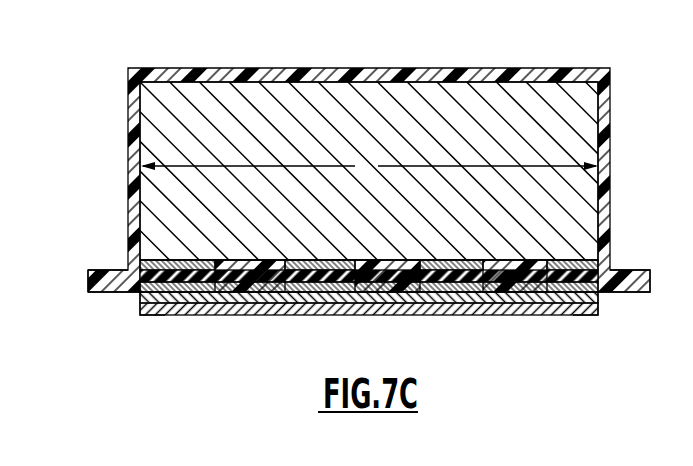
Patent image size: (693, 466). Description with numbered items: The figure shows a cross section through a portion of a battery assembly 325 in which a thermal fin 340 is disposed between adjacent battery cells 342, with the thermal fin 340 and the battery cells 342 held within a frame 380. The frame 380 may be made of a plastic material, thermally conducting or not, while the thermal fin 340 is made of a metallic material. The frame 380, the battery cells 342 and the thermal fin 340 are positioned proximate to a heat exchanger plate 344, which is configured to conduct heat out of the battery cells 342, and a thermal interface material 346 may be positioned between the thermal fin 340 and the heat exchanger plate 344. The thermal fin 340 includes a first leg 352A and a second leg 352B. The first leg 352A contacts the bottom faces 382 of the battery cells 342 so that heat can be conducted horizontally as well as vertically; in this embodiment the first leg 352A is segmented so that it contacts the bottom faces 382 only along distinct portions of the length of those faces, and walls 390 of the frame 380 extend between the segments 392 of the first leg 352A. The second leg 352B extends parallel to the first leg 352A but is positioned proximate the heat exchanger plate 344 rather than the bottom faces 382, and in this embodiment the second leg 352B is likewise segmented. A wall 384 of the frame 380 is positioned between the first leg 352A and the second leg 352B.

The battery assembly 325 is at (515, 49).
The battery cells 342 is at (392, 146).
The frame 380 is at (97, 258).
The segments 392 is at (160, 246).
The walls 390 is at (235, 262).
The bottom faces 382 is at (509, 263).
The first leg 352A is at (213, 250).
The second leg 352B is at (207, 304).
The wall 384 is at (400, 302).
The heat exchanger plate 344 is at (333, 315).
The thermal fin 340 is at (133, 300).
The thermal interface material 346 is at (585, 313).